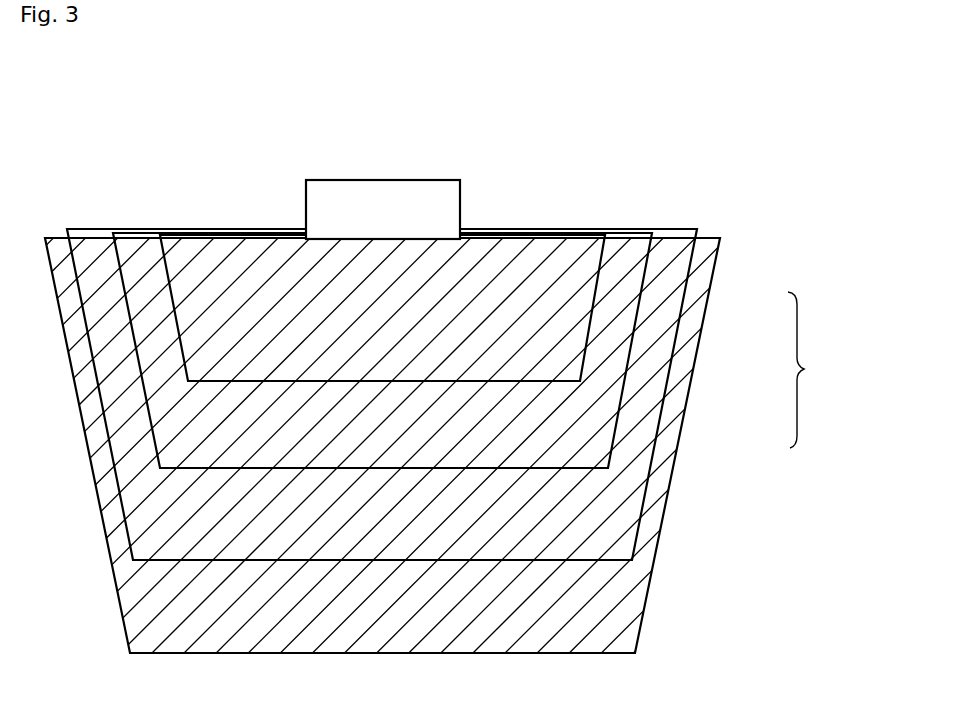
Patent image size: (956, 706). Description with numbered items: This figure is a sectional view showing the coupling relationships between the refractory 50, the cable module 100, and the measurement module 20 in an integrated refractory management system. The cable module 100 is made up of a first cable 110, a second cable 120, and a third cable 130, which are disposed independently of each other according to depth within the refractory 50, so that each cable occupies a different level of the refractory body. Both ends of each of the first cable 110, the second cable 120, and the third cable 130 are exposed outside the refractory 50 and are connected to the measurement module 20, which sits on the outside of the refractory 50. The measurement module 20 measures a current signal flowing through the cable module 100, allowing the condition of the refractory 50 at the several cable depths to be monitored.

The measurement module 20 is at (418, 208).
The refractory 50 is at (613, 616).
The cable module 100 is at (819, 370).
The first cable 110 is at (655, 428).
The second cable 120 is at (628, 358).
The third cable 130 is at (583, 302).